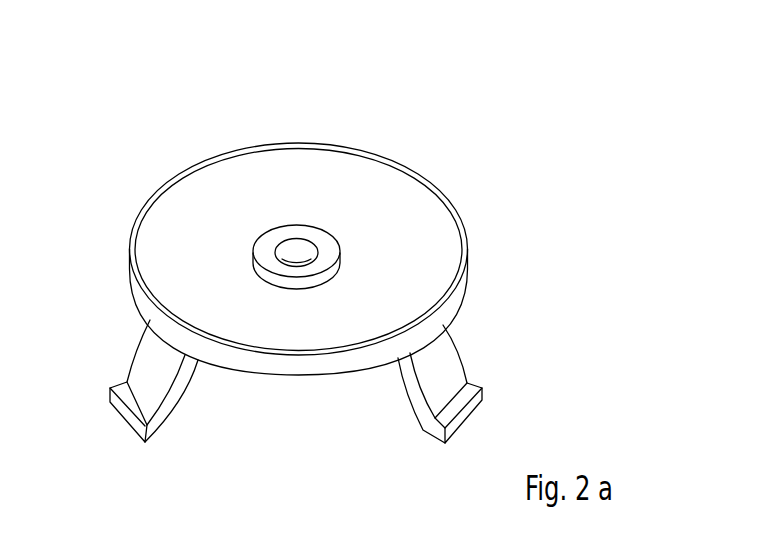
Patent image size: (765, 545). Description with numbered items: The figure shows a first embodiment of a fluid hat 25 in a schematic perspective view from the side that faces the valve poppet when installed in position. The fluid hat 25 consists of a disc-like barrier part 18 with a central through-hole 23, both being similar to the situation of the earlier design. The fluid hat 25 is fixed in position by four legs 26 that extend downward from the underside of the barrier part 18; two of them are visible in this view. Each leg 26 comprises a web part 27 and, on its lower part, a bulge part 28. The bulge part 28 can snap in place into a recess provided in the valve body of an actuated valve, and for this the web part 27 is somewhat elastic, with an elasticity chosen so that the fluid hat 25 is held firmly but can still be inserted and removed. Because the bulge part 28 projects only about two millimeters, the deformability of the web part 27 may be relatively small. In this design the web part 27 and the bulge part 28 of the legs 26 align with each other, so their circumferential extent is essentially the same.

The barrier part 18 is at (363, 187).
The through-hole 23 is at (292, 250).
The fluid hat 25 is at (520, 168).
The leg 26 is at (126, 348).
The web part 27 is at (150, 378).
The bulge part 28 is at (110, 403).